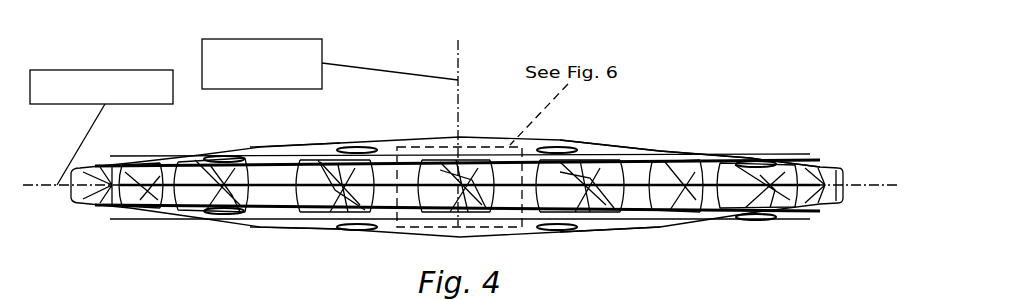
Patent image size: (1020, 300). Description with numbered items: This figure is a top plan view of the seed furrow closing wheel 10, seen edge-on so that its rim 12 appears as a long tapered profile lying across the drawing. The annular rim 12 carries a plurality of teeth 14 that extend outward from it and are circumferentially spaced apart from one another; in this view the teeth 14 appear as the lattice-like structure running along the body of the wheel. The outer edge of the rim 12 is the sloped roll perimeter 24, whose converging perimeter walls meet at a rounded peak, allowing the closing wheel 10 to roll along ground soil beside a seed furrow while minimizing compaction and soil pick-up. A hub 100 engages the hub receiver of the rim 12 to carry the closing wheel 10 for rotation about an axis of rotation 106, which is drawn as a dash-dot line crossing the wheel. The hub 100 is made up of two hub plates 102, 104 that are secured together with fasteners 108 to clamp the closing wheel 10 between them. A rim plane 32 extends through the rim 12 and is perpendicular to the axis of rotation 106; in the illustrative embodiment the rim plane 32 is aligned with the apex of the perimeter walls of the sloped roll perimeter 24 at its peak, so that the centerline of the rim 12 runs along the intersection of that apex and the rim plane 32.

The seed furrow closing wheel 10 is at (799, 62).
The rim 12 is at (628, 146).
The teeth 14 is at (471, 148).
The sloped roll perimeter 24 is at (272, 216).
The rim plane 32 is at (122, 70).
The hub 100 is at (718, 146).
The hub plate 102 is at (646, 247).
The hub plate 104 is at (662, 146).
The axis of rotation 106 is at (306, 40).
The fasteners 108 is at (357, 140).